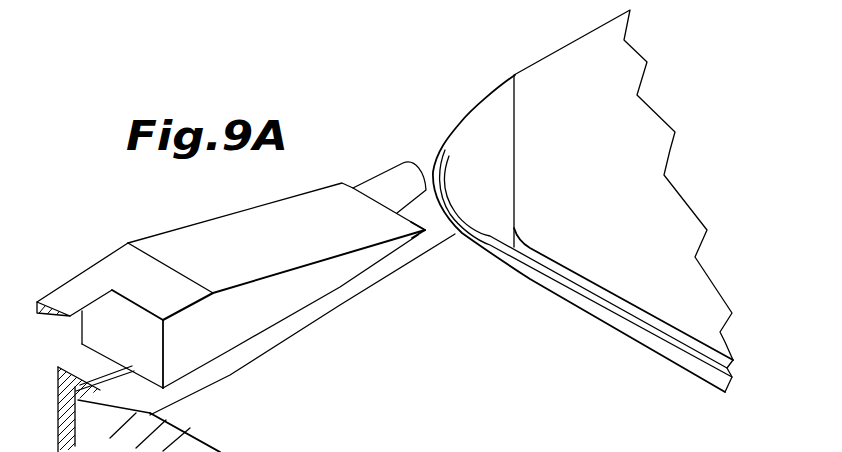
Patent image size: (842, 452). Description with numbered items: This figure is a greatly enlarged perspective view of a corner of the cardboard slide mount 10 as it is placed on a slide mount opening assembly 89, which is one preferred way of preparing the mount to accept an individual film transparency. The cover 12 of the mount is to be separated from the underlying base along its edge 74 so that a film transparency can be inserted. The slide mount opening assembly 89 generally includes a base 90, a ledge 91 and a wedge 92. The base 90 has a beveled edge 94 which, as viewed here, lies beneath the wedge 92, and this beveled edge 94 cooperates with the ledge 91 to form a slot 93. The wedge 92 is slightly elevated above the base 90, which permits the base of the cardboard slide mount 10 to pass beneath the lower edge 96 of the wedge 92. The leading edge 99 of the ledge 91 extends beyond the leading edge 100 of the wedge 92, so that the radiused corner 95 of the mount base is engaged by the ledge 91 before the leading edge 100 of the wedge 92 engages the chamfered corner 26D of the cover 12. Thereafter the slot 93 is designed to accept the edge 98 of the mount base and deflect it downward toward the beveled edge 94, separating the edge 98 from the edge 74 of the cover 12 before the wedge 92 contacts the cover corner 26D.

The cardboard slide mount 10 is at (594, 338).
The cover 12 is at (499, 52).
The corner of cover 26D is at (517, 153).
The edge of cover 74 is at (625, 430).
The slide mount opening assembly 89 is at (87, 252).
The base 90 is at (479, 341).
The ledge 91 is at (85, 362).
The wedge 92 is at (288, 217).
The slot 93 is at (85, 393).
The beveled edge 94 is at (167, 414).
The inner liner layer 95 is at (470, 245).
The lower edge of wedge 96 is at (323, 295).
The edge of base 98 is at (497, 100).
The leading edge of ledge 99 is at (416, 159).
The leading edge of wedge 100 is at (405, 219).